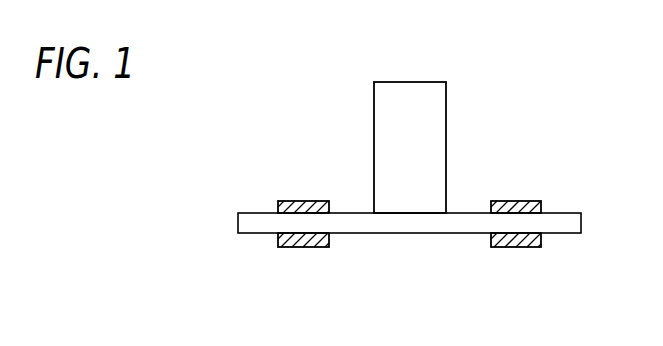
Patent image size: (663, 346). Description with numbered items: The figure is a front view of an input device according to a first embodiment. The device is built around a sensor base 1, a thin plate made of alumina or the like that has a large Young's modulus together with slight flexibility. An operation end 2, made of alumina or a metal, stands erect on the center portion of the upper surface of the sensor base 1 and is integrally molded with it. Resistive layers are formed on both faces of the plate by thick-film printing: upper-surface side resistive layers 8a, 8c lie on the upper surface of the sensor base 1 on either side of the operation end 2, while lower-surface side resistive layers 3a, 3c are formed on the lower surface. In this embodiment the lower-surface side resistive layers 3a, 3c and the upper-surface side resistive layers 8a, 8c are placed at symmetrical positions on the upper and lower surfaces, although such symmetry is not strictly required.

The sensor base 1 is at (410, 234).
The operation end 2 is at (412, 82).
The upper-surface side resistive layer 8a is at (304, 201).
The upper-surface side resistive layer 8c is at (570, 170).
The lower-surface side resistive layer 3a is at (301, 247).
The lower-surface side resistive layer 3c is at (513, 247).